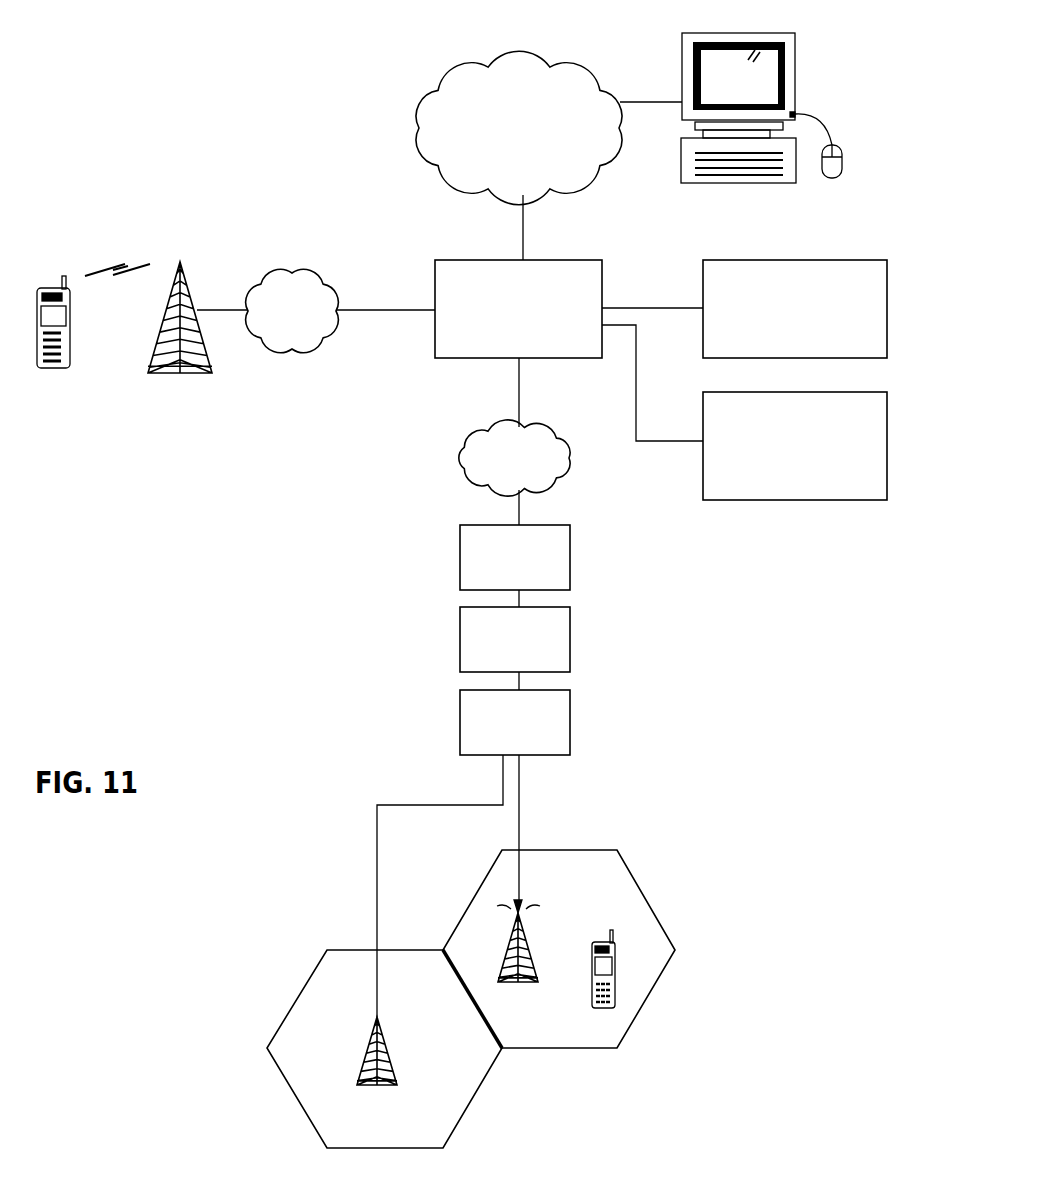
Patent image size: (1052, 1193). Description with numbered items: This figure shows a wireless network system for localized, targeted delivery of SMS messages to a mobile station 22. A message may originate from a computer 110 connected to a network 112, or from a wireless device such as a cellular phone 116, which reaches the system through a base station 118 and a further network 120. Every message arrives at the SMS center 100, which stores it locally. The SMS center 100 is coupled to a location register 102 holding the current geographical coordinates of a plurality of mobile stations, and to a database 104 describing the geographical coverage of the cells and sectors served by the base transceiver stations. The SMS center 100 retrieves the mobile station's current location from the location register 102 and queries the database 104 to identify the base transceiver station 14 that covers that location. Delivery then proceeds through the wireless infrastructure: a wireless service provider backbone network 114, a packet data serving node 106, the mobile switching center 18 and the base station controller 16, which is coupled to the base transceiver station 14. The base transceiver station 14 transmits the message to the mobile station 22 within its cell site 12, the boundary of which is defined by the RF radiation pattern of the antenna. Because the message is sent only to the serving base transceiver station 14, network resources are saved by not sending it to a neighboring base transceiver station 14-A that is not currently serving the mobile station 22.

The computer 110 is at (797, 68).
The network 112 is at (420, 148).
The SMS center 100 is at (572, 260).
The location register 102 is at (778, 260).
The database 104 is at (745, 500).
The wireless service provider backbone network 114 is at (555, 482).
The packet data serving node 106 is at (570, 580).
The mobile switching center 18 is at (570, 665).
The base station controller 16 is at (570, 748).
The cell site 12 is at (675, 950).
The base transceiver station 14 is at (500, 961).
The base transceiver station 14-A is at (355, 1075).
The mobile station 22 is at (587, 970).
The cellular phone 116 is at (52, 368).
The base station 118 is at (155, 378).
The network 120 is at (265, 343).